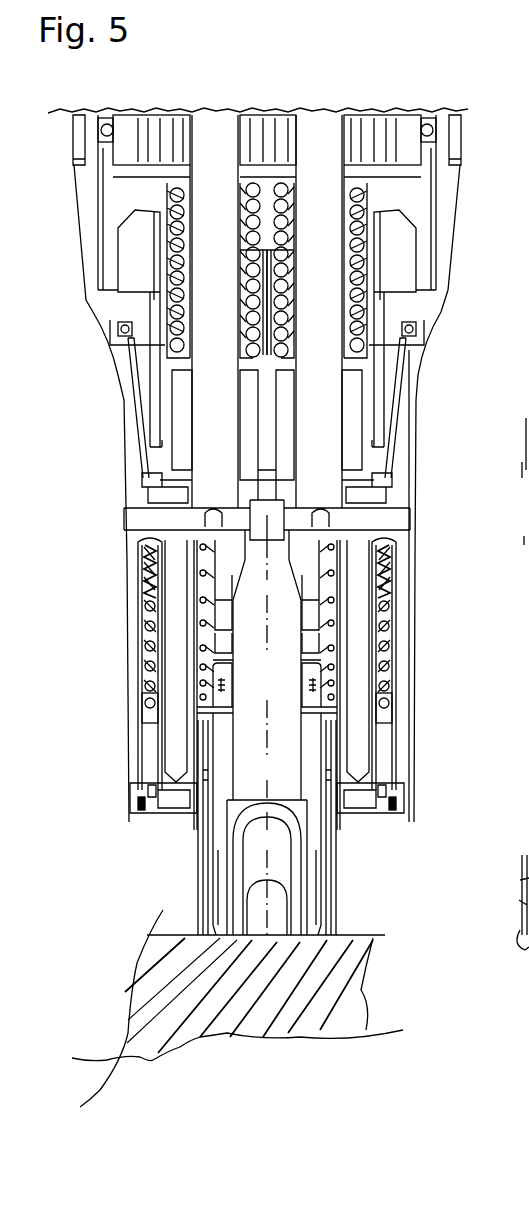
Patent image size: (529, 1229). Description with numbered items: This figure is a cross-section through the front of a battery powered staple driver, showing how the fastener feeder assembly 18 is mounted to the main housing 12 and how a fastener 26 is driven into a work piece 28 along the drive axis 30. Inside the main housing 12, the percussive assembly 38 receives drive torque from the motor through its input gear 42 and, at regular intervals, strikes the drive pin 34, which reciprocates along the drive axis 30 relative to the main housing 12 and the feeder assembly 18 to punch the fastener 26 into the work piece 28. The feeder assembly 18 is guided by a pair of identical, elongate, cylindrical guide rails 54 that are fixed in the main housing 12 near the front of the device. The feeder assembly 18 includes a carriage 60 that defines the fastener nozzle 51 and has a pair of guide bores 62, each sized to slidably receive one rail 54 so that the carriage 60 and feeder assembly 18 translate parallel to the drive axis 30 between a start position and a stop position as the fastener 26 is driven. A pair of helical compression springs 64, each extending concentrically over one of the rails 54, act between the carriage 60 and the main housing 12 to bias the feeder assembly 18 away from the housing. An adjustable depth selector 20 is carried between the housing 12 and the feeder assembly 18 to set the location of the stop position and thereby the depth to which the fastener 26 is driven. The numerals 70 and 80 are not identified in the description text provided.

The main housing 12 is at (412, 700).
The fastener feeder assembly 18 is at (528, 803).
The adjustable depth selector 20 is at (528, 477).
The fastener 26 is at (233, 840).
The work piece 28 is at (363, 938).
The drive axis 30 is at (268, 845).
The drive pin 34 is at (282, 684).
The percussive assembly 38 is at (395, 215).
The input gear 42 is at (374, 137).
The fastener nozzle 51 is at (225, 855).
The guide rails 54 is at (141, 625).
The carriage 60 is at (141, 710).
The guide bores 62 is at (148, 697).
The helical compression springs 64 is at (141, 575).
The magazine 70 is at (518, 430).
The feeder 80 is at (523, 528).